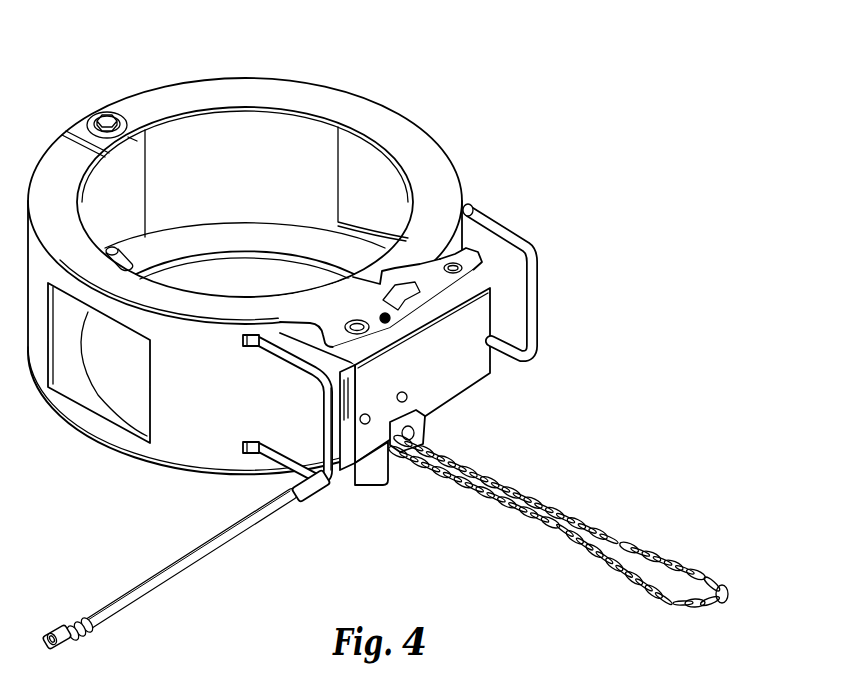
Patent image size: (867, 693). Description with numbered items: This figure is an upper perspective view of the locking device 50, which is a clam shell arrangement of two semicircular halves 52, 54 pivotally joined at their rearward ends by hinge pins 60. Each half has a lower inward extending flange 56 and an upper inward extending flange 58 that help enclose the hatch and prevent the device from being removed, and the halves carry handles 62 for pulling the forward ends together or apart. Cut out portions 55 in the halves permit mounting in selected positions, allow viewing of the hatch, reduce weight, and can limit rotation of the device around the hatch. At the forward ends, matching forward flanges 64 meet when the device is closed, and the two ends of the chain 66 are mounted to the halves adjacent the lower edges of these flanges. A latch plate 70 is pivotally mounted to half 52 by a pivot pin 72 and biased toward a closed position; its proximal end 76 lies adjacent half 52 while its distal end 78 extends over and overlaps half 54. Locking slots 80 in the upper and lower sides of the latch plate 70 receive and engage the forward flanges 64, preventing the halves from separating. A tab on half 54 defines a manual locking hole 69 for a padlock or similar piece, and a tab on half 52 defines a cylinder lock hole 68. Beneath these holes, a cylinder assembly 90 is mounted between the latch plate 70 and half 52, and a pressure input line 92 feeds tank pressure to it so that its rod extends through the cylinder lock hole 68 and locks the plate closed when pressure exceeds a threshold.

The locking device 50 is at (385, 335).
The semicircular half 52 is at (237, 251).
The semicircular half 54 is at (300, 88).
The cut out portion 55 is at (370, 175).
The lower inward extending flange 56 is at (233, 237).
The upper inward extending flange 58 is at (212, 92).
The hinge pin 60 is at (107, 112).
The handle 62 is at (394, 362).
The forward flange 64 is at (410, 296).
The chain 66 is at (600, 563).
The cylinder lock hole 68 is at (357, 316).
The manual locking hole 69 is at (453, 258).
The latch plate 70 is at (377, 354).
The pivot pin 72 is at (428, 432).
The proximal end 76 is at (372, 472).
The distal end 78 is at (475, 318).
The locking slot 80 is at (487, 306).
The cylinder assembly 90 is at (325, 418).
The pressure input line 92 is at (130, 605).